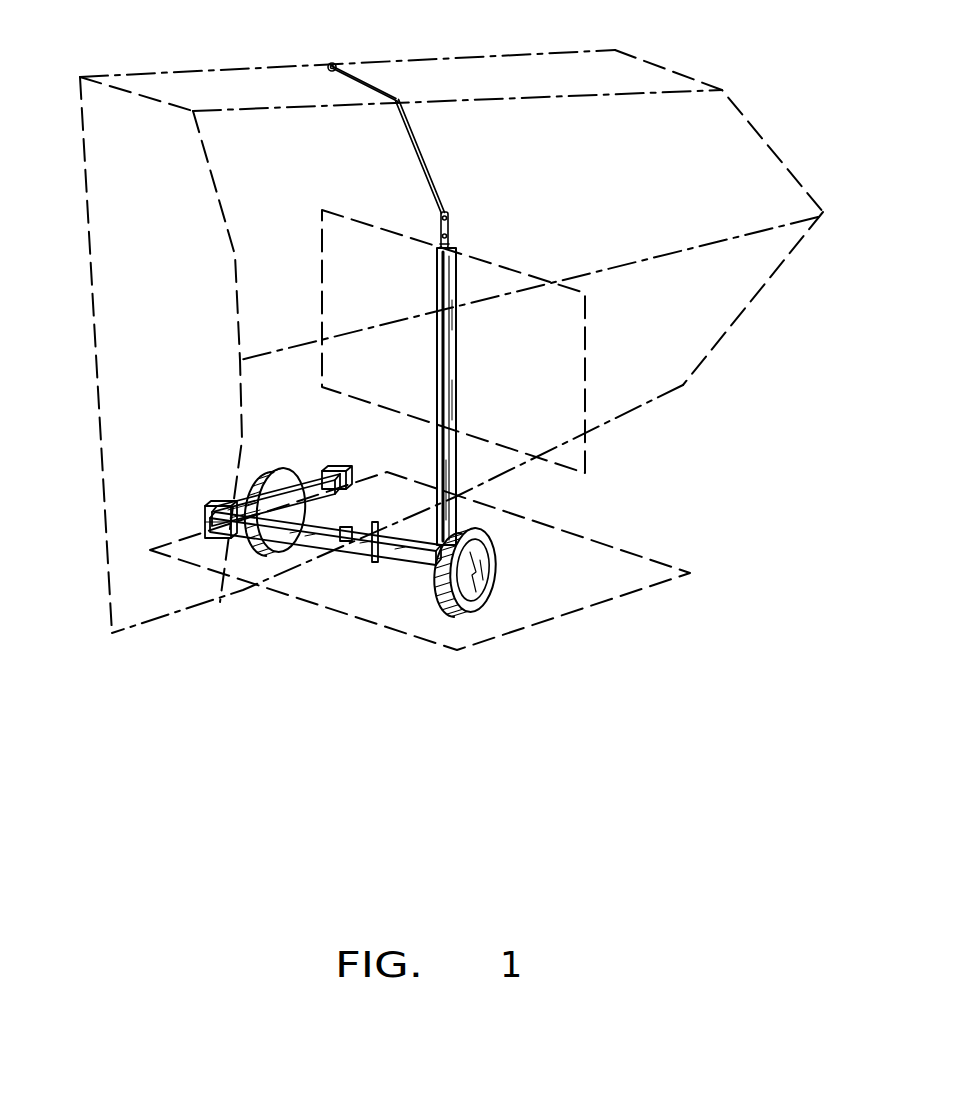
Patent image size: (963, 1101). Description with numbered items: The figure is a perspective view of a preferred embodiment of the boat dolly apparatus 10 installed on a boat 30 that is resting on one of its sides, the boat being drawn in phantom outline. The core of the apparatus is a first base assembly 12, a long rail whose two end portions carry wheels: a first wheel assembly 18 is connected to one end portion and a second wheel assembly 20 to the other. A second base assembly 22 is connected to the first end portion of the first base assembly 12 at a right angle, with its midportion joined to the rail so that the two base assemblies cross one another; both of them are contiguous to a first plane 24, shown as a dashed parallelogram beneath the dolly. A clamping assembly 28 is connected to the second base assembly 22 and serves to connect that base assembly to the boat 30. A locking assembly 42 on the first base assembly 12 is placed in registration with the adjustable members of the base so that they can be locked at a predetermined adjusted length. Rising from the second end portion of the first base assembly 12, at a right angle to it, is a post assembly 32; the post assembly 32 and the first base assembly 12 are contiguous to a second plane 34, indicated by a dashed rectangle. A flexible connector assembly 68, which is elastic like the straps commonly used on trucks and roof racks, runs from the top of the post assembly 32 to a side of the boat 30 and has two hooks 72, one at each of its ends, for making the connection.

The boat dolly apparatus 10 is at (577, 226).
The first base assembly 12 is at (425, 558).
The first wheel assembly 18 is at (260, 487).
The second wheel assembly 20 is at (497, 558).
The second base assembly 22 is at (260, 553).
The first plane 24 is at (645, 557).
The clamping assembly 28 is at (205, 508).
The boat 30 is at (141, 97).
The post assembly 32 is at (453, 472).
The second plane 34 is at (587, 353).
The locking assembly 42 is at (360, 558).
The flexible connector assembly 68 is at (367, 87).
The hooks 72 is at (332, 66).